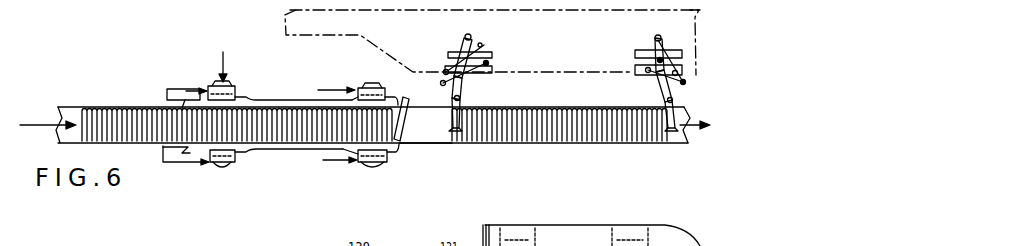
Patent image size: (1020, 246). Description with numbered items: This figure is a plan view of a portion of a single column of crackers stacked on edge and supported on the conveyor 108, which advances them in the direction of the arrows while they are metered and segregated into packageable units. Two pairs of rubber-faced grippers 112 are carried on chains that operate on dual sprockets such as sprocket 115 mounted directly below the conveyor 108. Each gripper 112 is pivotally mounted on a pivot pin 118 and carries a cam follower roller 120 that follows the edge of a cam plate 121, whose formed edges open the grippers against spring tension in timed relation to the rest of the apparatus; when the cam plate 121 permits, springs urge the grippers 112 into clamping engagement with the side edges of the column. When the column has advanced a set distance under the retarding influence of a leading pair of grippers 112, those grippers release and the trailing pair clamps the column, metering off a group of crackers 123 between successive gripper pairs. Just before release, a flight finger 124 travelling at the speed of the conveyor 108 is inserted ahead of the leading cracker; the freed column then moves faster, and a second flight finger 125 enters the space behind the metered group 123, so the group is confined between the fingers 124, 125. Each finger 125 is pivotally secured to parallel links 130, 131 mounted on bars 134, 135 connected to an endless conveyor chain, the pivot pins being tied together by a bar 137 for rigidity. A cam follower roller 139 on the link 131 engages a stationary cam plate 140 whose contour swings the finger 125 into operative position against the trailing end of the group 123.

The conveyor 108 is at (66, 110).
The rubber-faced grippers 112 is at (212, 85).
The dual sprocket 115 is at (262, 4).
The pivot pin 118 is at (172, 0).
The cam follower roller 120 is at (374, 86).
The cam plate 121 is at (167, 95).
The group of crackers 123 is at (595, 107).
The flight finger 124 is at (405, 143).
The flight finger 125 is at (448, 140).
The link 130 is at (680, 93).
The link 131 is at (660, 40).
The bar 134 is at (634, 70).
The bar 135 is at (636, 54).
The bar 137 is at (668, 62).
The cam follower roller 139 is at (684, 76).
The stationary cam plate 140 is at (330, 44).